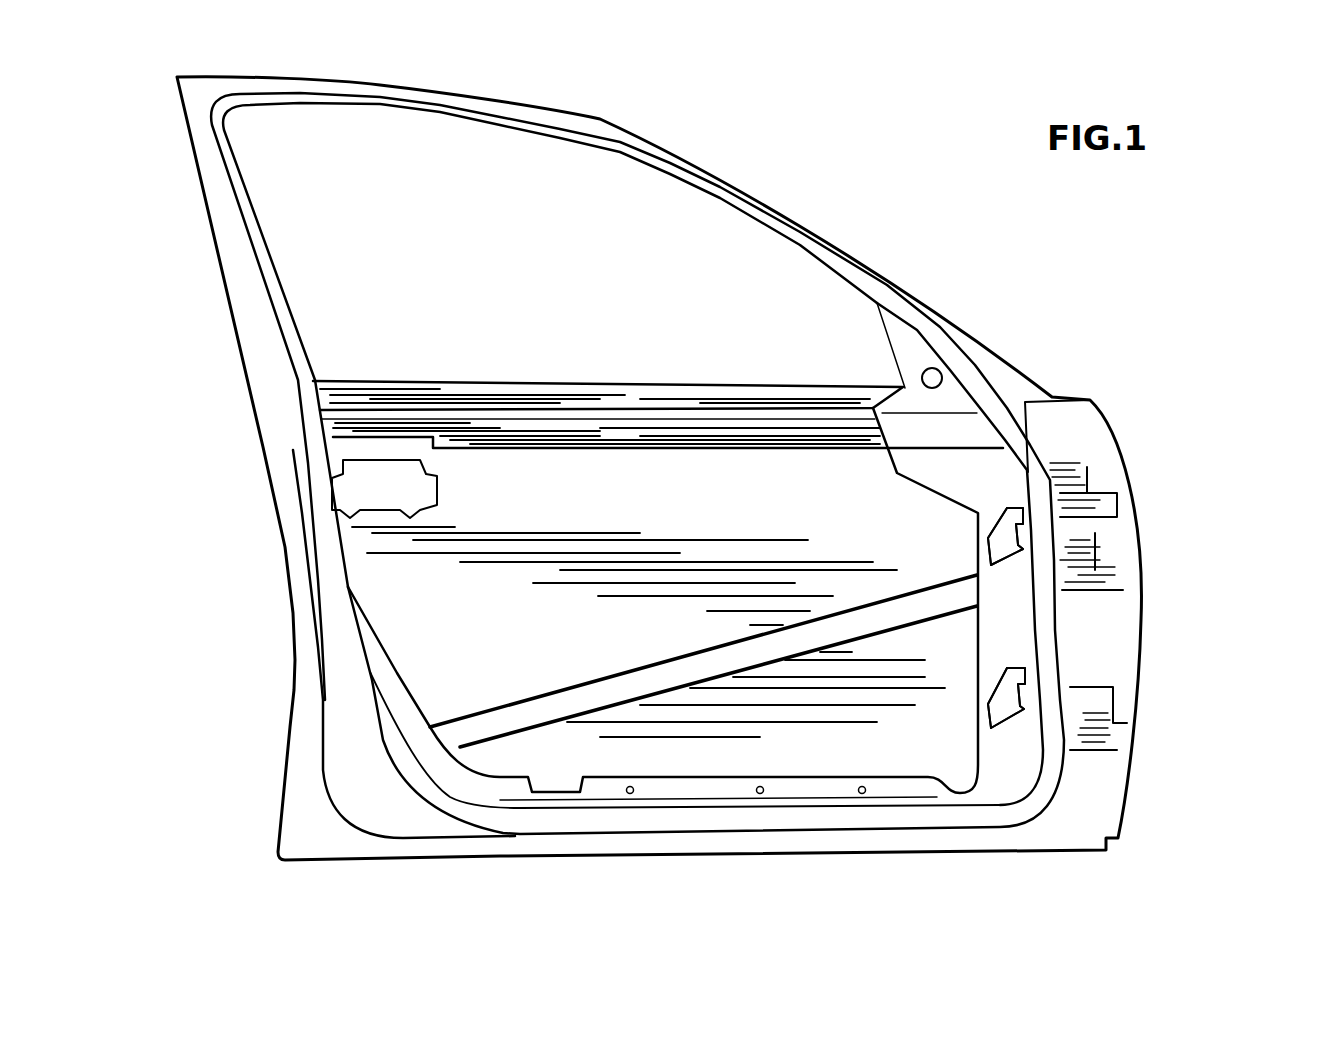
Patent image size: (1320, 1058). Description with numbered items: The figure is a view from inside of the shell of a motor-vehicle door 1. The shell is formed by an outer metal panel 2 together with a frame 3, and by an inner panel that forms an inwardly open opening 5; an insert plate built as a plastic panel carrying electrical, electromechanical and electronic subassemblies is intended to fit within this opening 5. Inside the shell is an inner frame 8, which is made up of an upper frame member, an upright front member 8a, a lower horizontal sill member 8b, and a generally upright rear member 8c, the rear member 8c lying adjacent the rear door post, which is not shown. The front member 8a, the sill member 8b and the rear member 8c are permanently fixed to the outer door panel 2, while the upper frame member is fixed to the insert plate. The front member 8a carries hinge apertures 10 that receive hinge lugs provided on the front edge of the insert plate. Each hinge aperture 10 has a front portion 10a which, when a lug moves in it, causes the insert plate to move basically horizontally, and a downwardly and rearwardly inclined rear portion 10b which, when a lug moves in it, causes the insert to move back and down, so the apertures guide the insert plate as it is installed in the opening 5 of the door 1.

The motor-vehicle door 1 is at (878, 203).
The outer metal panel 2 is at (560, 488).
The frame 3 is at (680, 392).
The inwardly open opening 5 is at (350, 587).
The inner frame 8 is at (470, 820).
The upright front member 8a is at (1022, 753).
The lower horizontal sill member 8b is at (708, 788).
The rear member 8c is at (378, 685).
The hinge aperture 10 is at (1033, 472).
The front portion 10a is at (1015, 693).
The rear portion 10b is at (1003, 550).